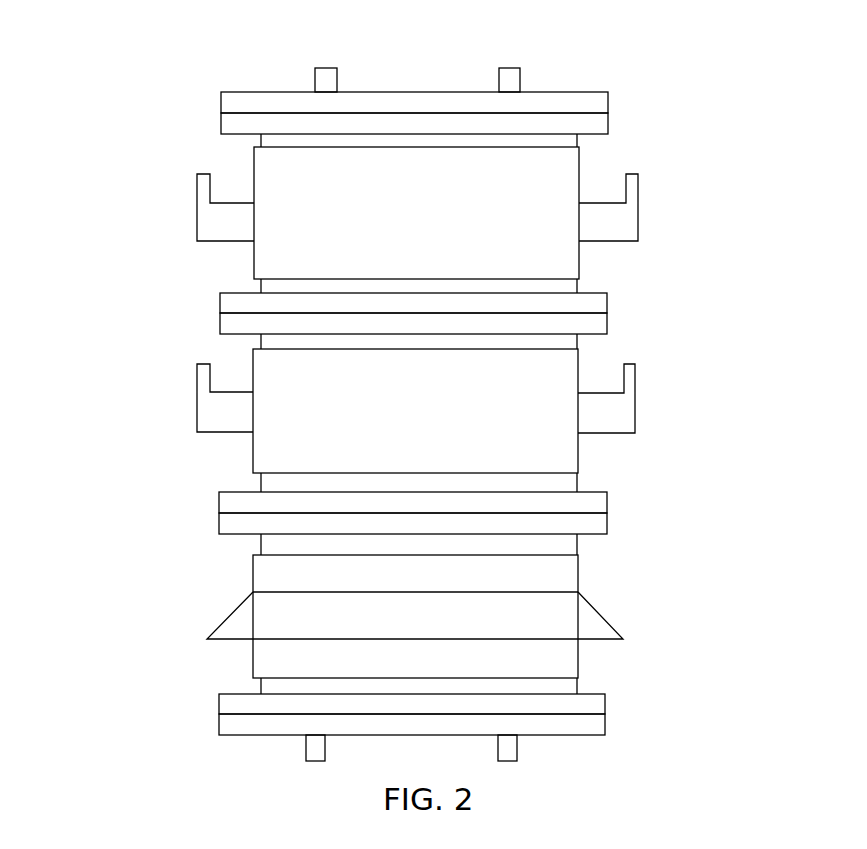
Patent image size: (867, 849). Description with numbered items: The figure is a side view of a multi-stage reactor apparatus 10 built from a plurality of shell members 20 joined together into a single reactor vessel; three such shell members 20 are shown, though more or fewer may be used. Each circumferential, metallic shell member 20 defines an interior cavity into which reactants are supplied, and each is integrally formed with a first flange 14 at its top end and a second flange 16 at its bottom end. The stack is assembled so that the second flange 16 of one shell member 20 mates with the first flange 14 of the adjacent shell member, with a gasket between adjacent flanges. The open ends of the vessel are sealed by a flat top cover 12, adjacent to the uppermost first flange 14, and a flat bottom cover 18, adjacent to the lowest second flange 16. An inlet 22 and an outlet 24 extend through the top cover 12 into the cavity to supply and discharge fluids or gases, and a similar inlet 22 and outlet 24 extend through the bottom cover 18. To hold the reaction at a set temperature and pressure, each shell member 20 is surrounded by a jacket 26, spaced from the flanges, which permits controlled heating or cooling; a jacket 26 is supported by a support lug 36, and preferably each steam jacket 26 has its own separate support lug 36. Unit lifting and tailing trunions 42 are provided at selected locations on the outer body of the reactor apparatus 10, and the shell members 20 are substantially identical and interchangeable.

The reactor apparatus 10 is at (170, 107).
The top cover 12 is at (608, 105).
The first flange 14 is at (608, 126).
The second flange 16 is at (608, 299).
The bottom cover 18 is at (605, 723).
The shell member 20 is at (275, 284).
The inlet 22 is at (325, 77).
The outlet 24 is at (510, 80).
The jacket 26 is at (280, 443).
The support lug 36 is at (252, 613).
The trunion 42 is at (223, 223).